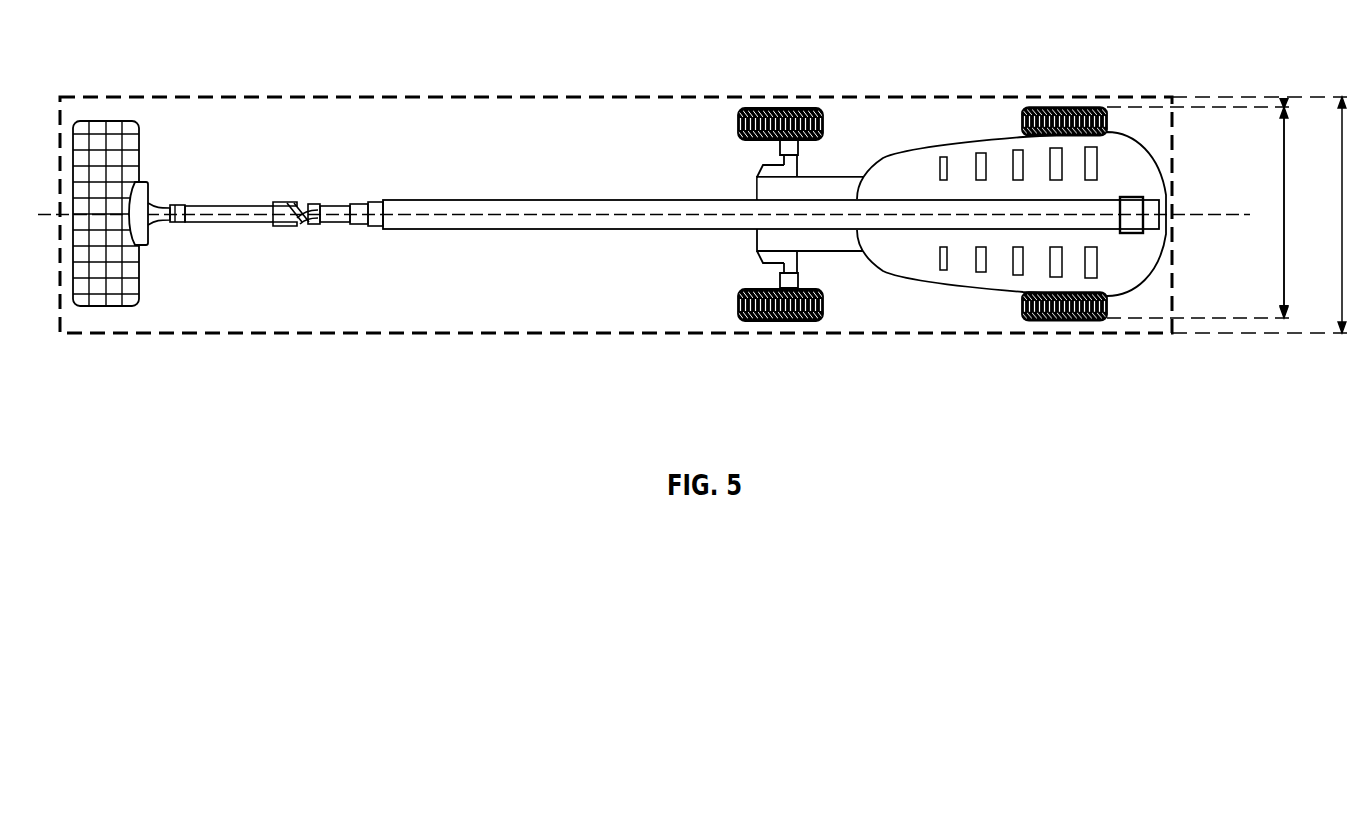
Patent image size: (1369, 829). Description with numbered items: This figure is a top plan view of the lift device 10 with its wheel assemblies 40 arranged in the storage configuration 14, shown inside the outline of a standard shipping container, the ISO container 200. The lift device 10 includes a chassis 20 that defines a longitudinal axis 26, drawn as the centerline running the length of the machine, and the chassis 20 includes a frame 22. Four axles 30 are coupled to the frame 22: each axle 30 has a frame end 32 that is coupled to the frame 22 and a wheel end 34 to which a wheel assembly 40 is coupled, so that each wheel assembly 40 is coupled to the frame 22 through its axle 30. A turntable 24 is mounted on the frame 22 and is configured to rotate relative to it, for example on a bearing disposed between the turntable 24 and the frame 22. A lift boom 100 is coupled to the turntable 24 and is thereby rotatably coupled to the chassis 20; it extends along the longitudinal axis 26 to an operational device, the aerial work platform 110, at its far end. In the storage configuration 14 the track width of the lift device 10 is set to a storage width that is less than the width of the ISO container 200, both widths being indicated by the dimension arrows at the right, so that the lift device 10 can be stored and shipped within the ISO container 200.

The lift device 10 is at (997, 58).
The storage configuration 14 is at (1171, 382).
The chassis 20 is at (789, 185).
The frame 22 is at (850, 188).
The turntable 24 is at (1140, 162).
The longitudinal axis 26 is at (1191, 212).
The axle 30 is at (786, 165).
The frame end 32 is at (760, 170).
The wheel end 34 is at (771, 148).
The wheel assembly 40 is at (784, 97).
The lift boom 100 is at (558, 200).
The aerial work platform 110 is at (108, 121).
The ISO container 200 is at (260, 80).